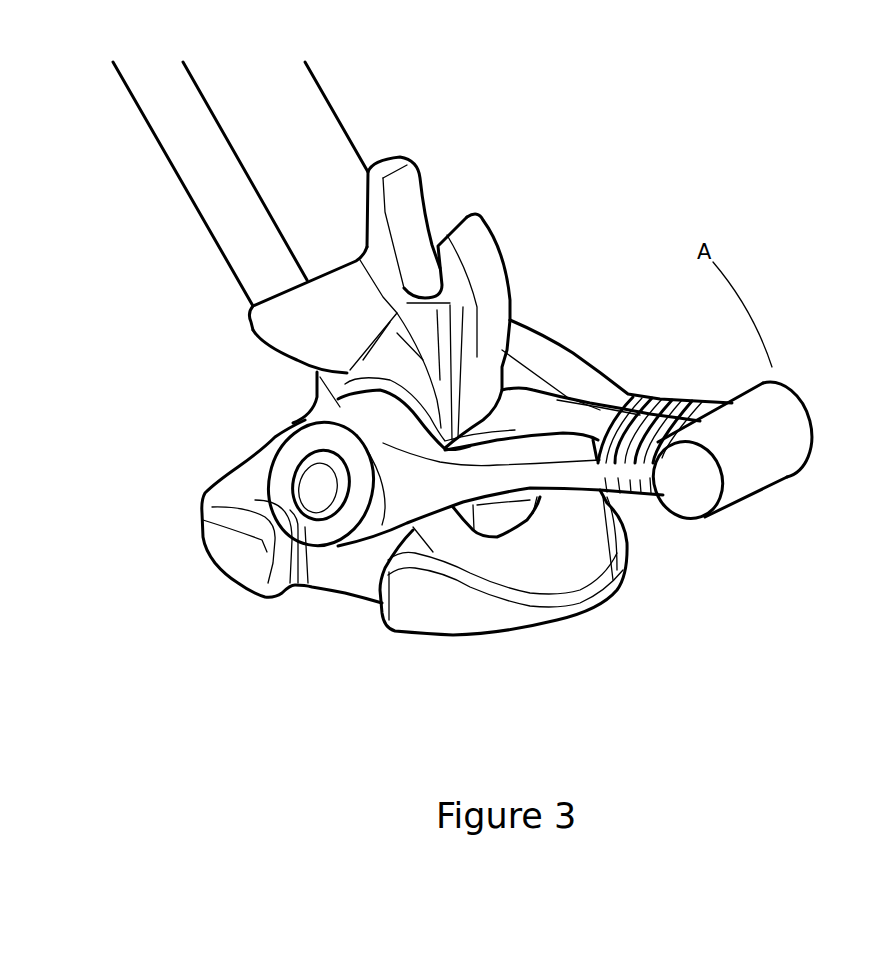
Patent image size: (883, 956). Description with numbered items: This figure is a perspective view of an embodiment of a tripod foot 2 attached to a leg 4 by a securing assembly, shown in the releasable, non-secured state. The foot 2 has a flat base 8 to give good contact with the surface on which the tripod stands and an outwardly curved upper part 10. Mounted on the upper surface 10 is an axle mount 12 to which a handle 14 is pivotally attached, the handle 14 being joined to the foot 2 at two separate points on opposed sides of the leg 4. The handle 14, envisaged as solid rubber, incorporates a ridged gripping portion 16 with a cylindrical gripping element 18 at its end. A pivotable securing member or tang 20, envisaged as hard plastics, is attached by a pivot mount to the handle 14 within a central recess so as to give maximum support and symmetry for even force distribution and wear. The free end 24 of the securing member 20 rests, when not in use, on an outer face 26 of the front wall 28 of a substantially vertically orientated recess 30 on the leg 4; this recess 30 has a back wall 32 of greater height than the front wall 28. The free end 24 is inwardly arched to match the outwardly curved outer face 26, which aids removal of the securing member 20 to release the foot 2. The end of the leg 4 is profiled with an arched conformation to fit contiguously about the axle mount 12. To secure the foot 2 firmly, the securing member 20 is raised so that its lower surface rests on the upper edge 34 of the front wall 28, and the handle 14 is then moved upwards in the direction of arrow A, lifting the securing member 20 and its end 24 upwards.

The foot 2 is at (220, 537).
The leg 4 is at (300, 138).
The flat base 8 is at (367, 605).
The outwardly curved upper part 10 is at (520, 570).
The axle mount 12 is at (360, 407).
The handle 14 is at (420, 493).
The ridged gripping portion 16 is at (620, 473).
The cylindrical gripping element 18 is at (745, 477).
The securing member 20 is at (575, 420).
The free end 24 is at (553, 395).
The outer face 26 is at (498, 313).
The front wall 28 is at (510, 282).
The recess 30 is at (431, 238).
The back wall 32 is at (399, 204).
The upper edge 34 is at (480, 215).